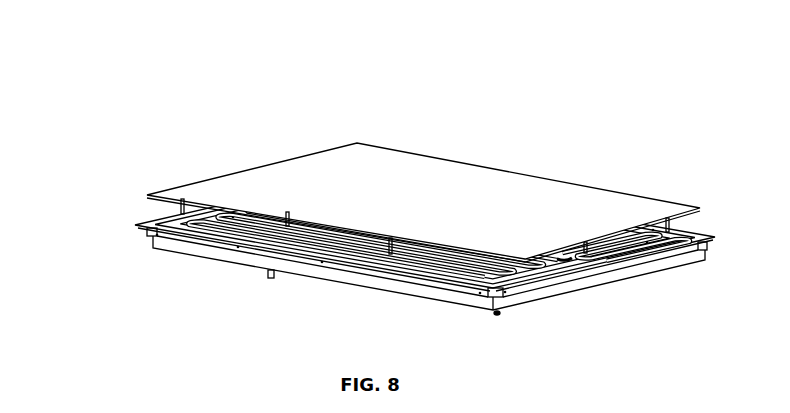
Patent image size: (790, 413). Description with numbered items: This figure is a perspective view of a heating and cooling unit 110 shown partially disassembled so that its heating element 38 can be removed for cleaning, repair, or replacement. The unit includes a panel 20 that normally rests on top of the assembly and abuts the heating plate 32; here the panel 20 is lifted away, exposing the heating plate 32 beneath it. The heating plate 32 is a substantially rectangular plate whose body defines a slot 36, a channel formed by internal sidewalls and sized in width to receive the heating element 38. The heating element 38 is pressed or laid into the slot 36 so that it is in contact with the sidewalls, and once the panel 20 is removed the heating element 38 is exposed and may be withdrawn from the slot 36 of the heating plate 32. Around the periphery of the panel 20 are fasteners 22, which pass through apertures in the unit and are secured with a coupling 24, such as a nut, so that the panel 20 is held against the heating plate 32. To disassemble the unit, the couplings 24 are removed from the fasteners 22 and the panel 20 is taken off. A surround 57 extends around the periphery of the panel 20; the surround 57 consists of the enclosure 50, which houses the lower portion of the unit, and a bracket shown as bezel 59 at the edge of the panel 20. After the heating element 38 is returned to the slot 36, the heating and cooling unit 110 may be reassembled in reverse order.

The heating and cooling unit 110 is at (380, 230).
The panel 20 is at (313, 168).
The fastener 22 is at (672, 222).
The coupling 24 is at (488, 321).
The heating plate 32 is at (572, 260).
The slot 36 is at (635, 254).
The heating element 38 is at (428, 263).
The enclosure 50 is at (402, 242).
The surround 57 is at (380, 242).
The bezel 59 is at (129, 223).